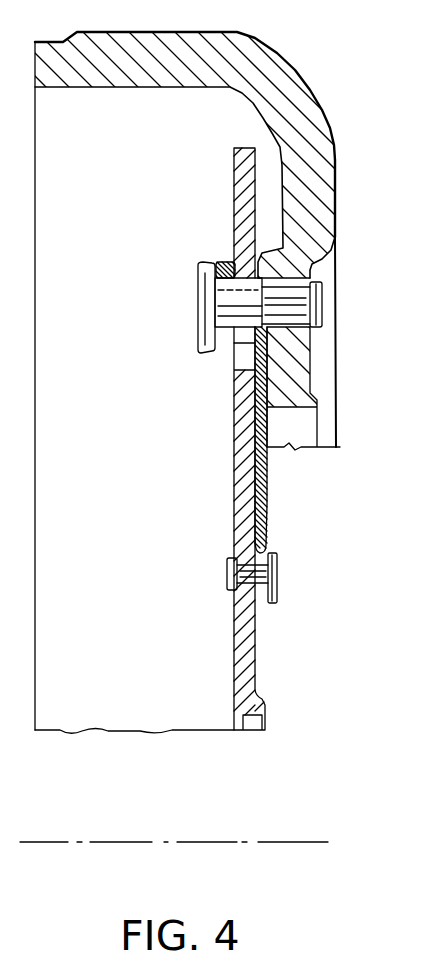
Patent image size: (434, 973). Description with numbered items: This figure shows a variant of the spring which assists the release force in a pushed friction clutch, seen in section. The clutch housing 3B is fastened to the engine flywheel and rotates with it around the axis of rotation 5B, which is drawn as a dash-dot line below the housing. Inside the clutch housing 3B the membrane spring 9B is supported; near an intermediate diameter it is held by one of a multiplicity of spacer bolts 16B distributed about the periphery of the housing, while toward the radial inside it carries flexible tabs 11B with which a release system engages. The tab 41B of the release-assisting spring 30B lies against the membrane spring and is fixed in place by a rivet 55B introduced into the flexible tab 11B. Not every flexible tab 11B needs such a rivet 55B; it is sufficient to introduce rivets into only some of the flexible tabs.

The clutch housing 3B is at (290, 92).
The membrane spring 9B is at (240, 190).
The spacer bolt 16B is at (300, 300).
The spring 30B is at (284, 339).
The tab of the spring 41B is at (268, 527).
The rivet 55B is at (278, 582).
The flexible tab 11B is at (262, 681).
The axis of rotation 5B is at (177, 842).